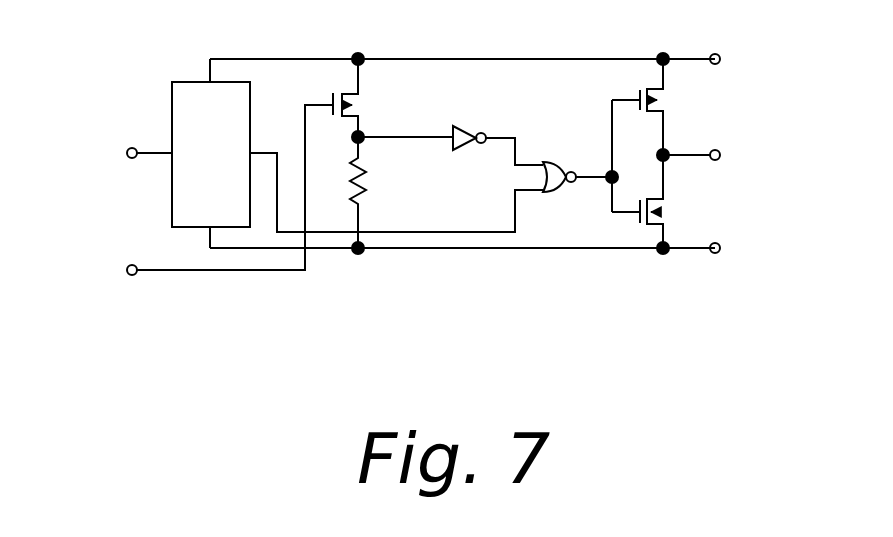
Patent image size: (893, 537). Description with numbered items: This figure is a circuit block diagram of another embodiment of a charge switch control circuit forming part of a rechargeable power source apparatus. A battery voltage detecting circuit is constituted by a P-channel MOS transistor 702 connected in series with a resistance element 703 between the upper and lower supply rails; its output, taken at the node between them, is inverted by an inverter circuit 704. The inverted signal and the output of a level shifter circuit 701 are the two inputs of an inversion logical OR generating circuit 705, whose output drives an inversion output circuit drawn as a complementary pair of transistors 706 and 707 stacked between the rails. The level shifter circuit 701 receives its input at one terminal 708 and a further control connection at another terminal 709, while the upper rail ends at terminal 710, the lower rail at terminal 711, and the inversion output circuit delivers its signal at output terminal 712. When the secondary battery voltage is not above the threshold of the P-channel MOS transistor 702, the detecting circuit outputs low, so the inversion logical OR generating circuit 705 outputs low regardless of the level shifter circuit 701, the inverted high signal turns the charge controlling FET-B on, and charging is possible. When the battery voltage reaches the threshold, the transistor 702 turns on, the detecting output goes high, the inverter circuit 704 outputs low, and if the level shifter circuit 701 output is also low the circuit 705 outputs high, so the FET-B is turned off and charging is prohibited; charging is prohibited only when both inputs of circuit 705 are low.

The level shifter circuit 701 is at (174, 220).
The P-channel MOS transistor 702 is at (408, 100).
The resistance element 703 is at (408, 177).
The inverter circuit 704 is at (493, 112).
The inversion logical OR generating circuit 705 is at (580, 137).
The P-channel transistor 706 is at (708, 103).
The N-channel transistor 707 is at (708, 208).
The input terminal 708 is at (127, 155).
The control terminal 709 is at (127, 270).
The power supply terminal 710 is at (725, 62).
The ground terminal 711 is at (725, 251).
The output terminal 712 is at (725, 158).